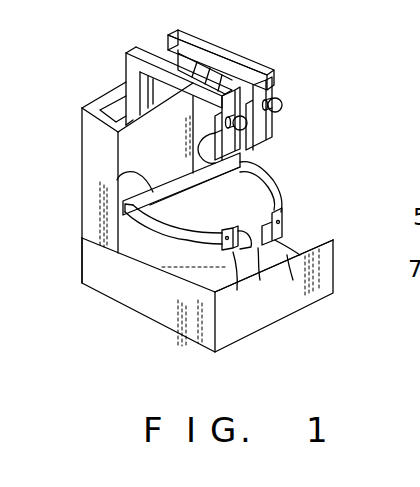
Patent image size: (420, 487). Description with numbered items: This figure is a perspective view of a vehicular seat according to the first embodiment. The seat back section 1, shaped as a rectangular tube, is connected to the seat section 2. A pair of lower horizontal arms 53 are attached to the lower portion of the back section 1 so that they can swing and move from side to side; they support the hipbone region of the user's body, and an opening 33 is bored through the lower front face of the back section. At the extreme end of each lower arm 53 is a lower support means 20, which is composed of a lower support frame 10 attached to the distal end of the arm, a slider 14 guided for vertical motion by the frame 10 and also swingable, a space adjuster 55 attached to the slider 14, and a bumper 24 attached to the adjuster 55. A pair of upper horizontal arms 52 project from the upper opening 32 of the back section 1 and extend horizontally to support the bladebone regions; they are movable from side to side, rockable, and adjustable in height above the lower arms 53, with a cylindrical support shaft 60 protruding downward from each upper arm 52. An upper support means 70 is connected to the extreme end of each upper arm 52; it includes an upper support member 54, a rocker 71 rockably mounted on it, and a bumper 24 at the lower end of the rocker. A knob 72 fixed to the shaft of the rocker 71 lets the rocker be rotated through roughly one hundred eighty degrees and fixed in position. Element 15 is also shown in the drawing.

The seat back section 1 is at (127, 145).
The seat section 2 is at (150, 252).
The lower support frame 10 is at (334, 238).
The slider 14 is at (237, 290).
The clamp 15 is at (222, 246).
The lower support means 20 is at (326, 227).
The bumper 24 is at (273, 130).
The upper opening 32 is at (108, 102).
The opening 33 is at (112, 180).
The upper horizontal arms 52 is at (140, 52).
The lower horizontal arms 53 is at (165, 236).
The upper support member 54 is at (282, 113).
The space adjuster 55 is at (260, 280).
The cylindrical support shaft 60 is at (128, 72).
The upper support means 70 is at (302, 64).
The rocker 71 is at (268, 140).
The knob 72 is at (283, 97).